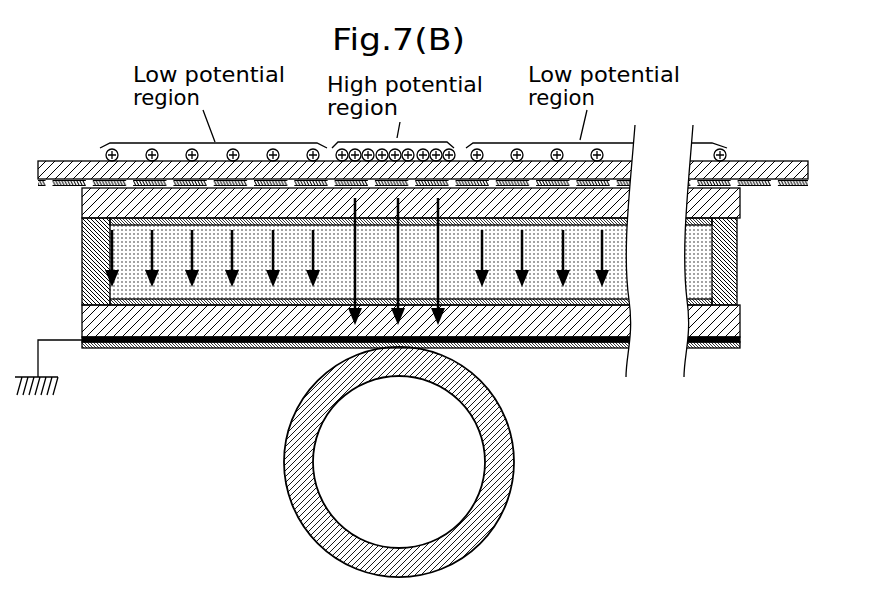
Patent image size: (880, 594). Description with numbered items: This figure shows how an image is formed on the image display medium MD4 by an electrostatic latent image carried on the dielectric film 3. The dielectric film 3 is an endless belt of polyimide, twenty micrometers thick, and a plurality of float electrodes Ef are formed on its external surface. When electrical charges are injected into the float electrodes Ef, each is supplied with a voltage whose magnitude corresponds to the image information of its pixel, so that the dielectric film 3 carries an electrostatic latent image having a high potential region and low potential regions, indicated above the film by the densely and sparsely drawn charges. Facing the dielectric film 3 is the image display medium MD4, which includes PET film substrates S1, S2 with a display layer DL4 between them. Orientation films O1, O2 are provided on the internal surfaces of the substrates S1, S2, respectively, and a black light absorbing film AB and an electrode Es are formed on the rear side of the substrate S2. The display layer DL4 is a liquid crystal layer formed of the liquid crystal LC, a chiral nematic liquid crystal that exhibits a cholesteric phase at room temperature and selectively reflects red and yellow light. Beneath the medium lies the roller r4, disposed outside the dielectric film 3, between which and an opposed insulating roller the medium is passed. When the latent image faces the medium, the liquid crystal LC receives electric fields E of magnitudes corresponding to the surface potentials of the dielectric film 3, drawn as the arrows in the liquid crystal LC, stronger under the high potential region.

The dielectric film 3 is at (37, 169).
The float electrodes Ef is at (103, 205).
The substrate S1 is at (737, 200).
The orientation film O1 is at (683, 218).
The liquid crystal LC is at (698, 263).
The orientation film O2 is at (685, 302).
The substrate S2 is at (730, 320).
The black light absorbing film AB is at (742, 340).
The electrode Es is at (740, 347).
The display layer DL4 is at (745, 260).
The image display medium MD4 is at (145, 362).
The roller r4 is at (500, 437).
The electric field E is at (115, 256).